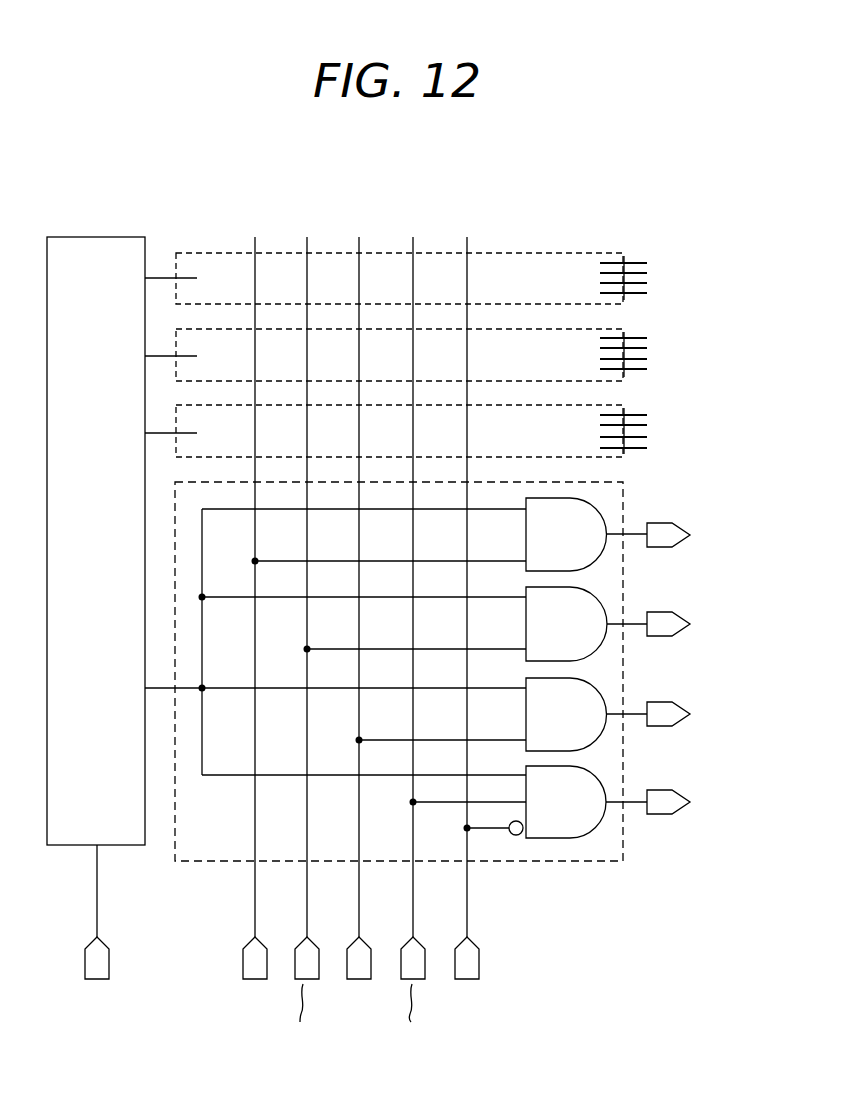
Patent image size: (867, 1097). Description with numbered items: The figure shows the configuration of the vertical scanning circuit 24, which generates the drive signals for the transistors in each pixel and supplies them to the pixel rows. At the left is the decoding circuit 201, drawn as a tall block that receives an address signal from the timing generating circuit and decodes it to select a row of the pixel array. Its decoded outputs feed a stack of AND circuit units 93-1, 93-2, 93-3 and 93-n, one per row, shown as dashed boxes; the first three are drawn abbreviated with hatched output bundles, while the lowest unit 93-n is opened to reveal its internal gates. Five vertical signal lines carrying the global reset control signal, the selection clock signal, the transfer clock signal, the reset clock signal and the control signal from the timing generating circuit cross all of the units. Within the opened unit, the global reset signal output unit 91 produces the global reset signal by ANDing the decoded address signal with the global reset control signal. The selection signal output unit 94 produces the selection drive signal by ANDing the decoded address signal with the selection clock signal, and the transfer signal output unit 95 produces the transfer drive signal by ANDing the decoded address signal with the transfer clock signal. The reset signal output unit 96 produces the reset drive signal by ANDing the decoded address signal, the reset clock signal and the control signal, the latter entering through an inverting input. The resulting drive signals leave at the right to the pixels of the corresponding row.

The vertical scanning circuit 24 is at (637, 177).
The decoding circuit 201 is at (103, 237).
The AND circuit unit 93-1 is at (594, 253).
The AND circuit unit 93-2 is at (594, 329).
The AND circuit unit 93-3 is at (594, 405).
The AND circuit unit 93-n is at (594, 482).
The global reset signal output unit 91 is at (587, 563).
The selection signal output unit 94 is at (587, 652).
The transfer signal output unit 95 is at (587, 742).
The reset signal output unit 96 is at (587, 829).